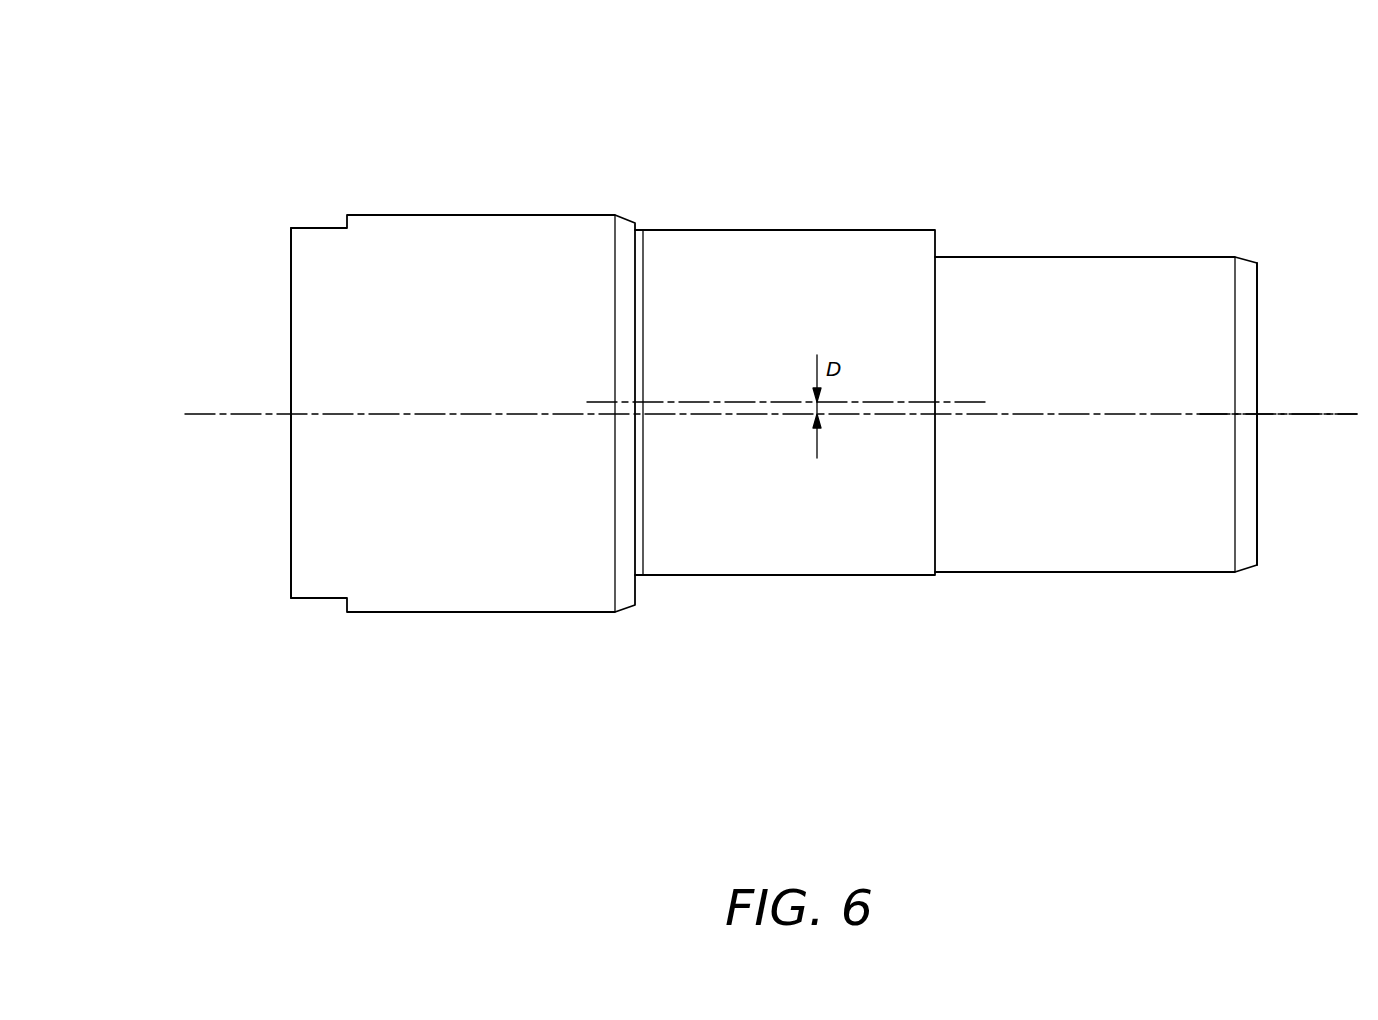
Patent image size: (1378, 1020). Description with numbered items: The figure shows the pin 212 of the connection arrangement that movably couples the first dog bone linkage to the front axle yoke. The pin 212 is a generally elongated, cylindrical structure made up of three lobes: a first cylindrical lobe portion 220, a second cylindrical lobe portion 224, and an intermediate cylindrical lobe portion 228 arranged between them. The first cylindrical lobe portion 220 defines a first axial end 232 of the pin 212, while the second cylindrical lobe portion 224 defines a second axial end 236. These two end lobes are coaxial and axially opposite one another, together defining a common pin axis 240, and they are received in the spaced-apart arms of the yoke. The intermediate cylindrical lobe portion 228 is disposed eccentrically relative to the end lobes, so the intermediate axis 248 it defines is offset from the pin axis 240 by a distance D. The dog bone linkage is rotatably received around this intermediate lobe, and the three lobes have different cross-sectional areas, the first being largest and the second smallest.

The pin 212 is at (231, 102).
The first cylindrical lobe portion 220 is at (635, 614).
The second cylindrical lobe portion 224 is at (1257, 567).
The intermediate cylindrical lobe portion 228 is at (935, 577).
The first axial end 232 is at (291, 294).
The second axial end 236 is at (1257, 294).
The pin axis 240 is at (1303, 415).
The intermediate axis 248 is at (727, 402).